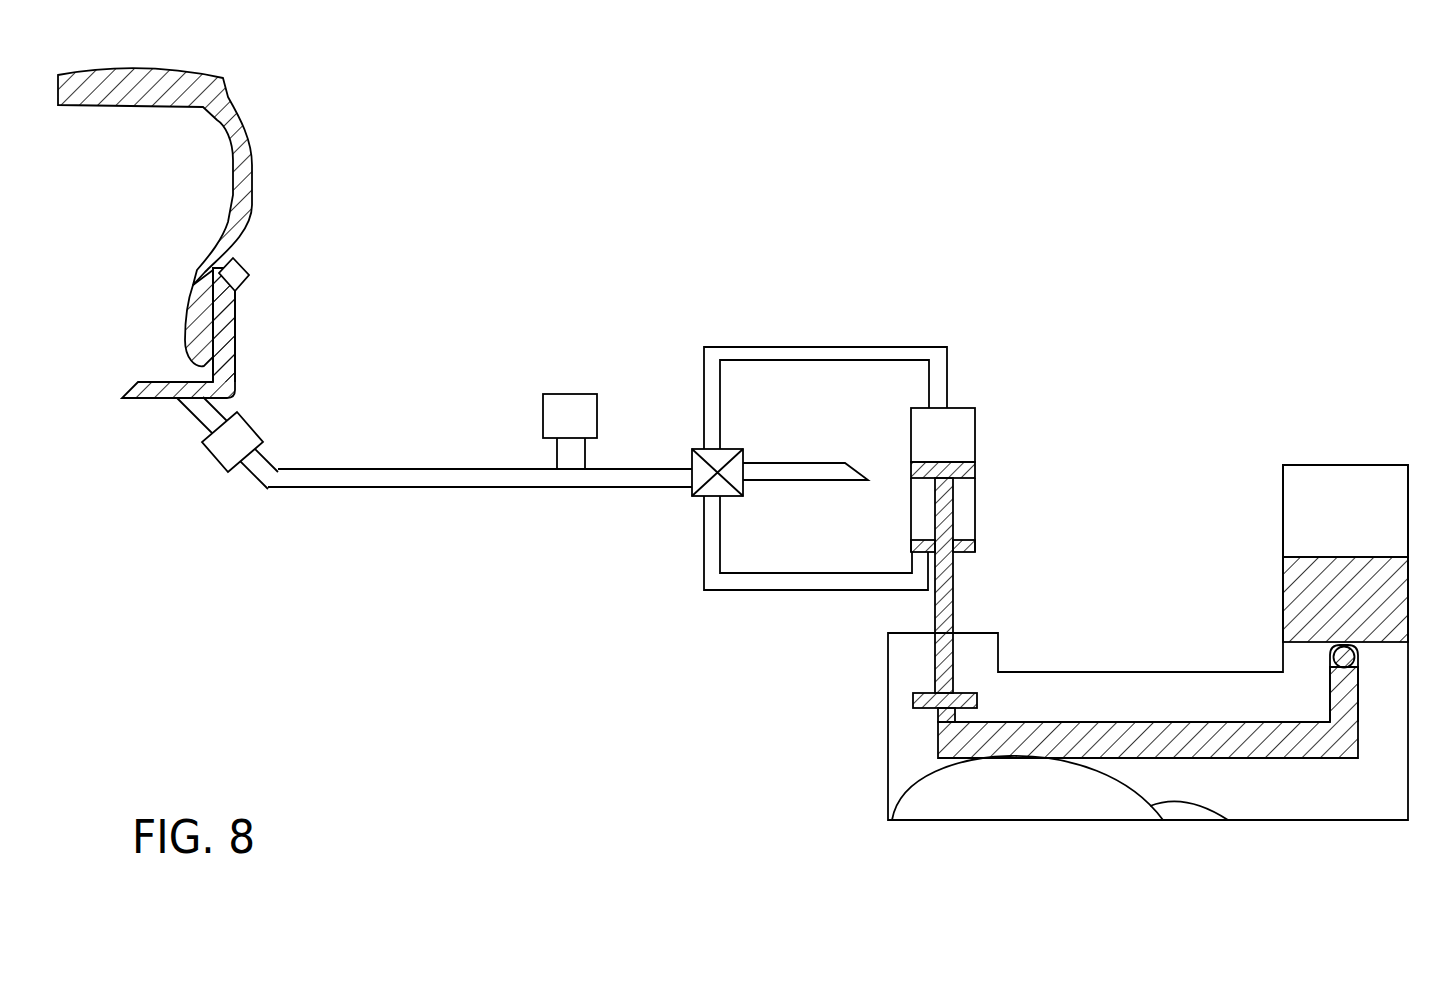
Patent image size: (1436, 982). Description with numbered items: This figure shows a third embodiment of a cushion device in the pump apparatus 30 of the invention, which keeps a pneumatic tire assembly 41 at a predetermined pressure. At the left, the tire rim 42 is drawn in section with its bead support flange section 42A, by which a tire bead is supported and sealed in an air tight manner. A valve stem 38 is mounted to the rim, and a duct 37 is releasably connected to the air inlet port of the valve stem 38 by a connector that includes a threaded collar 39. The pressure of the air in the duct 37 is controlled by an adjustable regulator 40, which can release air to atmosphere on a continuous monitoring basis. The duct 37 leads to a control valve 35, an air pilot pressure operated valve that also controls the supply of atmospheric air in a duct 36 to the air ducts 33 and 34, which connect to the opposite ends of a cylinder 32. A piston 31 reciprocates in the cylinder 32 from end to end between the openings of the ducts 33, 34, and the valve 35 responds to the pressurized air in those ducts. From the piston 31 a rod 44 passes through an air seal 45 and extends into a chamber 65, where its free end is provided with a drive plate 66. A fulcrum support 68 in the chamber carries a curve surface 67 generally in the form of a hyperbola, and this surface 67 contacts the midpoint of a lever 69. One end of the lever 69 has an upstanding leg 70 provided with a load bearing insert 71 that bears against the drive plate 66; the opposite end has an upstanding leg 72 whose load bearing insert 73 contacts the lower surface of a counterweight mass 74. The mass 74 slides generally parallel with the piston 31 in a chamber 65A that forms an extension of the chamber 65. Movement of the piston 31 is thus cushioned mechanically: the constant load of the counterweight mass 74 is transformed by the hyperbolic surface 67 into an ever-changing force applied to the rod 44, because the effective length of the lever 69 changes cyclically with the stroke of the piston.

The pump apparatus 30 is at (794, 332).
The piston 31 is at (975, 470).
The cylinder 32 is at (973, 422).
The air duct 33 is at (858, 345).
The air duct 34 is at (822, 593).
The control valve 35 is at (693, 495).
The duct 36 is at (790, 462).
The duct 37 is at (385, 493).
The valve stem 38 is at (197, 417).
The threaded collar 39 is at (245, 423).
The regulator 40 is at (573, 395).
The pneumatic tire assembly 41 is at (250, 140).
The tire rim 42 is at (162, 400).
The bead support flange section 42A is at (235, 330).
The rod 44 is at (953, 602).
The air seal 45 is at (975, 545).
The chamber 65 is at (888, 797).
The chamber 65A is at (1348, 465).
The drive plate 66 is at (913, 697).
The curve surface 67 is at (1228, 820).
The fulcrum support 68 is at (1033, 822).
The lever 69 is at (1155, 722).
The upstanding leg 70 is at (938, 742).
The load bearing insert 71 is at (937, 716).
The upstanding leg 72 is at (1325, 698).
The load bearing insert 73 is at (1330, 657).
The counterweight mass 74 is at (1290, 582).